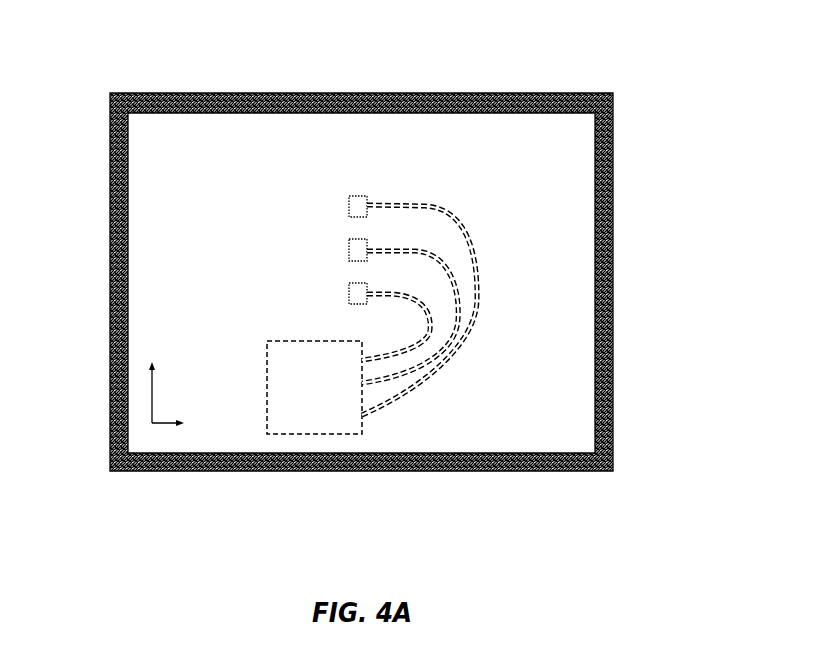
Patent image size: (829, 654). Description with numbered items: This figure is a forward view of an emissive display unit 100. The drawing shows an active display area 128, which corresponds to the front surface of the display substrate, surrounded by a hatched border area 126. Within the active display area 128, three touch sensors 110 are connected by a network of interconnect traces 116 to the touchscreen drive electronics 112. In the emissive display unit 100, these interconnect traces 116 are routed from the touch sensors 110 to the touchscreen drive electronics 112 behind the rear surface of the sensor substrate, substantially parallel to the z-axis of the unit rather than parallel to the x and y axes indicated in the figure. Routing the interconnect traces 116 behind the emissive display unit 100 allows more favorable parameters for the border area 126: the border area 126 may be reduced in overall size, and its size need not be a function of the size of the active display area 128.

The emissive display unit 100 is at (70, 49).
The touch sensors 110 is at (348, 252).
The touchscreen drive electronics 112 is at (314, 387).
The interconnect traces 116 is at (405, 392).
The border area 126 is at (615, 413).
The active display area 128 is at (536, 302).